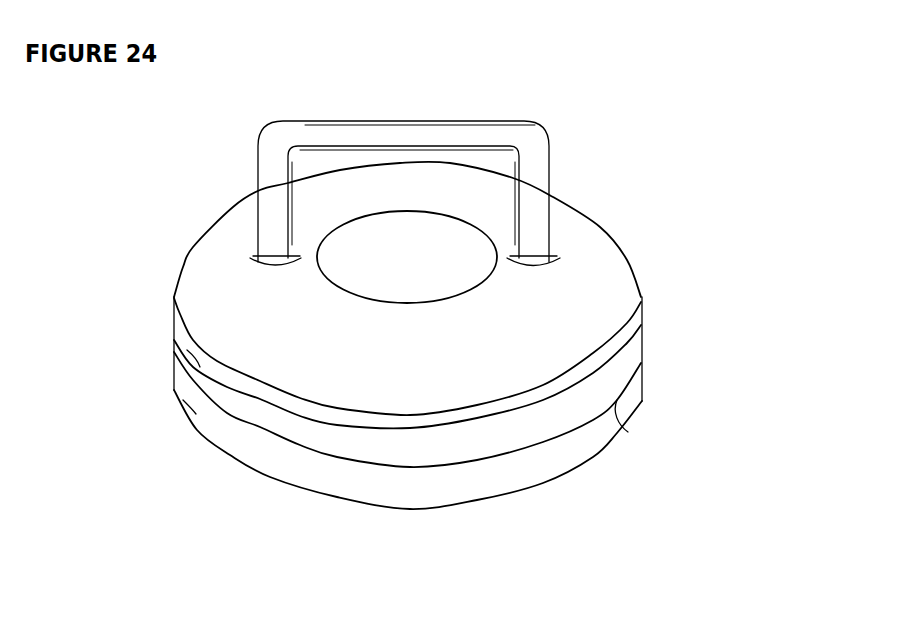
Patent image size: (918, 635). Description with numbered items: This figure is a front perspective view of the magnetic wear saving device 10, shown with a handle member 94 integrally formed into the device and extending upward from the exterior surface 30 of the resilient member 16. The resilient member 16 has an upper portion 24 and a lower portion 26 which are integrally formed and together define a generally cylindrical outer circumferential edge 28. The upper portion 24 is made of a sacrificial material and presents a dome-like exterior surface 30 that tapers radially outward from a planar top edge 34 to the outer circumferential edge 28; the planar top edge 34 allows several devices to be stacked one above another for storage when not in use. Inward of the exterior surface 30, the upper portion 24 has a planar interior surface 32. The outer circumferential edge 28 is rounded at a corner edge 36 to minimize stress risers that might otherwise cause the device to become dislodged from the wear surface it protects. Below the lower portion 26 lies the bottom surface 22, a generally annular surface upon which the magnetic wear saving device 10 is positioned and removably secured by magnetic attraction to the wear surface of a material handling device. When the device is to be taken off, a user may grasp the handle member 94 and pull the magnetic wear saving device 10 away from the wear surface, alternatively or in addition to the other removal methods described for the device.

The magnetic wear saving device 10 is at (631, 148).
The resilient member 16 is at (238, 201).
The bottom surface 22 is at (260, 478).
The upper portion 24 is at (190, 362).
The lower portion 26 is at (190, 410).
The outer circumferential edge 28 is at (641, 338).
The exterior surface 30 is at (215, 293).
The interior surface 32 is at (620, 405).
The planar top edge 34 is at (387, 289).
The corner edge 36 is at (641, 303).
The handle member 94 is at (474, 126).